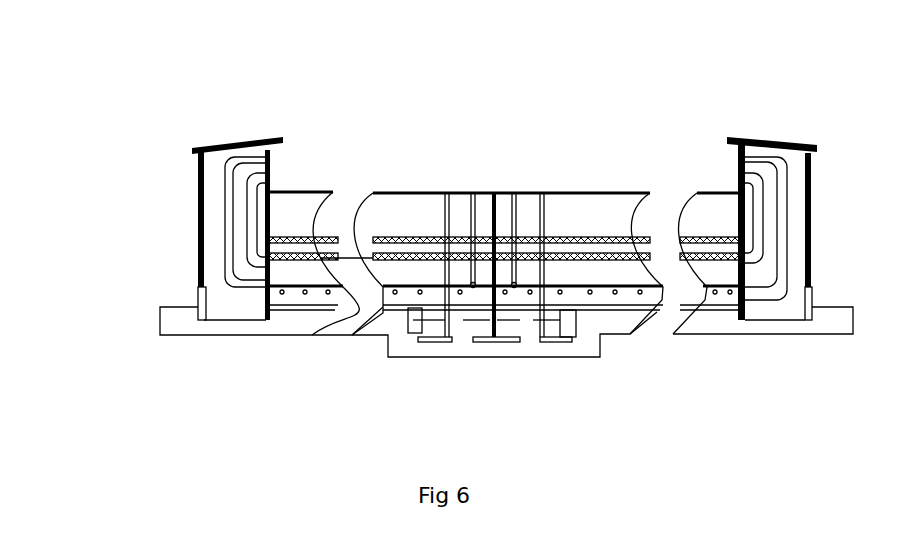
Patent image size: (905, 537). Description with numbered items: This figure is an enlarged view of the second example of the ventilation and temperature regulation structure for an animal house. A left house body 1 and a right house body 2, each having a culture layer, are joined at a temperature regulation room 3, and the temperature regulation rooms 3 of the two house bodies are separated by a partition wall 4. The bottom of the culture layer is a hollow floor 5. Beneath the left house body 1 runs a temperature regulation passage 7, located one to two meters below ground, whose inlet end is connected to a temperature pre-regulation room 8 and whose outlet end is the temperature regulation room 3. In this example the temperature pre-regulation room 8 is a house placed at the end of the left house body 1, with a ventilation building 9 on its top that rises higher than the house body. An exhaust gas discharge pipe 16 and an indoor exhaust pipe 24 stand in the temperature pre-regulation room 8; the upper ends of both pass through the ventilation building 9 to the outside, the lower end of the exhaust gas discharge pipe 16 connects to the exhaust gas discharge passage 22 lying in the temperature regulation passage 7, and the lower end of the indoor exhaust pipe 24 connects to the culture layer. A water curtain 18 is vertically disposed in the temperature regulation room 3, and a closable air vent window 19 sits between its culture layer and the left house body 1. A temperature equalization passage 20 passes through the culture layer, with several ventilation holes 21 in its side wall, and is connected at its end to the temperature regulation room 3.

The left house body 1 is at (468, 177).
The right house body 2 is at (720, 203).
The temperature regulation room 3 is at (520, 201).
The partition wall 4 is at (553, 316).
The hollow floor 5 is at (261, 325).
The temperature regulation passage 7 is at (228, 366).
The temperature pre-regulation room 8 is at (165, 259).
The ventilation building 9 is at (196, 118).
The exhaust gas discharge pipe 16 is at (151, 253).
The water curtain 18 is at (418, 156).
The air vent window 19 is at (506, 331).
The temperature equalization passage 20 is at (494, 168).
The ventilation hole 21 is at (471, 373).
The exhaust gas discharge passage 22 is at (161, 278).
The indoor exhaust pipe 24 is at (145, 230).